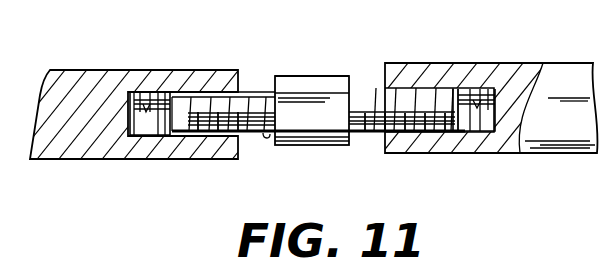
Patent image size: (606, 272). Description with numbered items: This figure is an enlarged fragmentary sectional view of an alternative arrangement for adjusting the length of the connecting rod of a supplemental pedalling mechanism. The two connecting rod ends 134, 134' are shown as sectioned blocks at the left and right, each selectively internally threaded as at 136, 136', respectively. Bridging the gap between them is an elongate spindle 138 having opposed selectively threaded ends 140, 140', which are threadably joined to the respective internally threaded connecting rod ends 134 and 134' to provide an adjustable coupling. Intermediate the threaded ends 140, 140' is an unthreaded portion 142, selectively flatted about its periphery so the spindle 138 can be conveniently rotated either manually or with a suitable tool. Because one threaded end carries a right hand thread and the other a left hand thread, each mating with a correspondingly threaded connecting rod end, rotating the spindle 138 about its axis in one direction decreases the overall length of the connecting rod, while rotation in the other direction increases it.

The connecting rod end 134 is at (166, 143).
The connecting rod end 134' is at (420, 131).
The internal threads 136 is at (146, 81).
The internal threads 136' is at (499, 72).
The spindle 138 is at (322, 76).
The threaded end 140 is at (318, 87).
The threaded end 140' is at (402, 139).
The unthreaded portion 142 is at (318, 146).